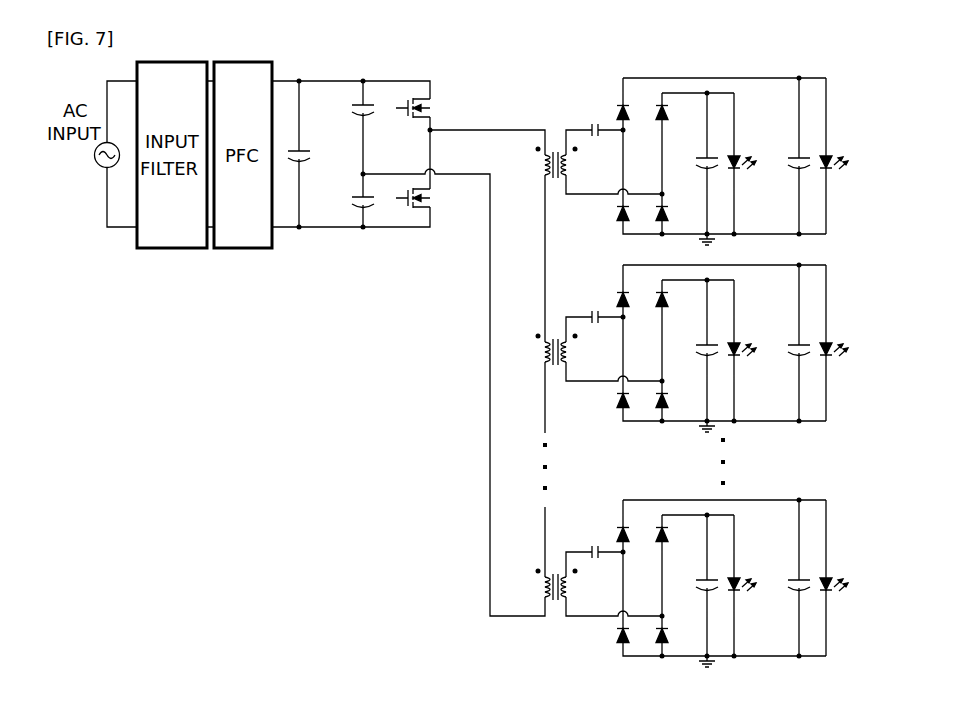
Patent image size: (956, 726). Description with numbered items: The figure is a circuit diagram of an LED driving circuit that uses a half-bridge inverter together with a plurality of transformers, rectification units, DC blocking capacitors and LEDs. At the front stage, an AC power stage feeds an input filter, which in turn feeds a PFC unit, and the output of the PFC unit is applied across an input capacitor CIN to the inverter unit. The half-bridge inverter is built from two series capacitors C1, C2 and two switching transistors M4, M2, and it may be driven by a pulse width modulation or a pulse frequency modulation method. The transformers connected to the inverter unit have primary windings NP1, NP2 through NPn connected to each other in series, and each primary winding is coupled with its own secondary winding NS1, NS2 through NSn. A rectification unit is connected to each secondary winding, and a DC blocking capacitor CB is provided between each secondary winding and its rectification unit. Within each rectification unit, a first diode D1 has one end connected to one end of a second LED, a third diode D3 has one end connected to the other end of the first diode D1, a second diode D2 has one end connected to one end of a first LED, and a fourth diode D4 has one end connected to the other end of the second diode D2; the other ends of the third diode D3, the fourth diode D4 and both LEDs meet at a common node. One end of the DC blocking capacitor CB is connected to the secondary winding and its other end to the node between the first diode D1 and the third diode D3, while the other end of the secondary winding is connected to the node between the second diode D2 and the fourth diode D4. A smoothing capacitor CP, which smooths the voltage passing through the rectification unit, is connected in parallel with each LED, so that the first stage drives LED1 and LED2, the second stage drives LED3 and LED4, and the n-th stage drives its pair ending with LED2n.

The input capacitor CIN is at (315, 157).
The half-bridge capacitor C1 is at (349, 109).
The half-bridge capacitor C2 is at (349, 202).
The high-side switching transistor M4 is at (405, 100).
The low-side switching transistor M2 is at (405, 195).
The primary winding of first transformer NP1 is at (527, 166).
The secondary winding of first transformer NS1 is at (585, 166).
The primary winding of second transformer NP2 is at (527, 353).
The secondary winding of second transformer NS2 is at (585, 353).
The primary winding of n-th transformer NPn is at (527, 588).
The secondary winding of n-th transformer NSn is at (585, 588).
The DC blocking capacitor CB is at (601, 353).
The first diode D1 is at (610, 324).
The second diode D2 is at (676, 324).
The third diode D3 is at (610, 426).
The fourth diode D4 is at (676, 426).
The smoothing capacitor CP is at (743, 371).
The light emitting diode string LED1 is at (756, 174).
The light emitting diode string LED2 is at (849, 174).
The light emitting diode string LED3 is at (756, 361).
The light emitting diode string LED4 is at (849, 361).
The light emitting diode string LED2n is at (854, 596).